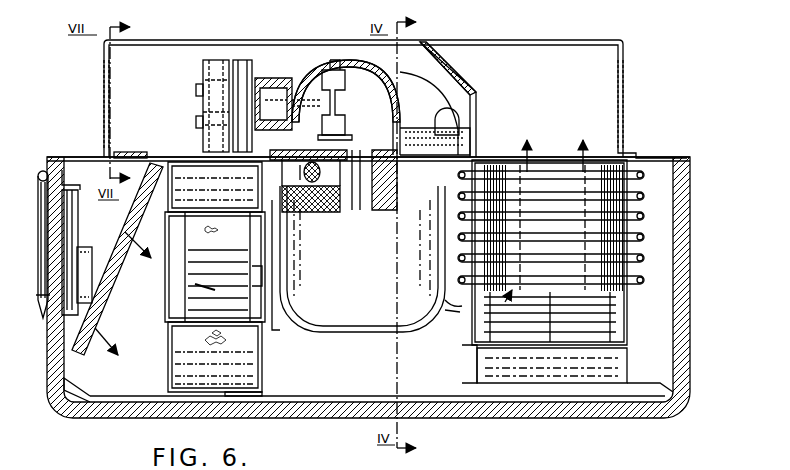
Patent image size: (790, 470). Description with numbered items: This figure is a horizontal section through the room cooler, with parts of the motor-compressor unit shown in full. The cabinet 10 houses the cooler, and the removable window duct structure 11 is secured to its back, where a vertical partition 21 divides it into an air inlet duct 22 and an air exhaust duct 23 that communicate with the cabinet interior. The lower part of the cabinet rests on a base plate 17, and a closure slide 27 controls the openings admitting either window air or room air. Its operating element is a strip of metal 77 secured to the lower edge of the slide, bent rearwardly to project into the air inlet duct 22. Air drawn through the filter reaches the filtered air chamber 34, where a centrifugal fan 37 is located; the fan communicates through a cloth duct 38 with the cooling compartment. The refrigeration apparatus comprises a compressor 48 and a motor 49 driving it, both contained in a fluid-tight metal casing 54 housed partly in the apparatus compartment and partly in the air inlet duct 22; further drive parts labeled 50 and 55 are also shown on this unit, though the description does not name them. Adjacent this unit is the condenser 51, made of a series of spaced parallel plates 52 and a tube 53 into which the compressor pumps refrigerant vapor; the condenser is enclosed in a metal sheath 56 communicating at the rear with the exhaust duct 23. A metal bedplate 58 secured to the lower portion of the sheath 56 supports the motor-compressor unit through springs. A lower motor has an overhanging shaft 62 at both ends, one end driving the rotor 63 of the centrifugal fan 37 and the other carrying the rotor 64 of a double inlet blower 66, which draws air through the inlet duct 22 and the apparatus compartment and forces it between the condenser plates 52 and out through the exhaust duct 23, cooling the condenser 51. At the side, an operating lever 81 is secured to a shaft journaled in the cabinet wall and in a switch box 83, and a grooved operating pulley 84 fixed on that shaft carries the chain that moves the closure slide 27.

The cabinet 10 is at (690, 272).
The window duct structure 11 is at (519, 40).
The base plate 17 is at (318, 392).
The vertical partition 21 is at (445, 62).
The air inlet duct 22 is at (125, 80).
The air exhaust duct 23 is at (606, 85).
The closure slide 27 is at (150, 170).
The filtered air chamber 34 is at (115, 380).
The centrifugal fan 37 is at (170, 350).
The cloth duct 38 is at (167, 268).
The compressor 48 is at (243, 60).
The motor 49 is at (323, 212).
The coupling 50 is at (284, 78).
The condenser 51 is at (546, 162).
The spaced parallel plates 52 is at (500, 162).
The tube 53 is at (645, 258).
The fluid-tight metal casing 54 is at (378, 318).
The motor end cap 55 is at (216, 60).
The metal sheath 56 is at (478, 362).
The metal bedplate 58 is at (458, 307).
The overhanging shaft 62 is at (274, 330).
The rotor 63 is at (185, 306).
The rotor 64 is at (612, 318).
The double inlet blower 66 is at (470, 340).
The strip of metal 77 is at (135, 156).
The operating lever 81 is at (38, 226).
The switch box 83 is at (86, 264).
The grooved operating pulley 84 is at (68, 218).